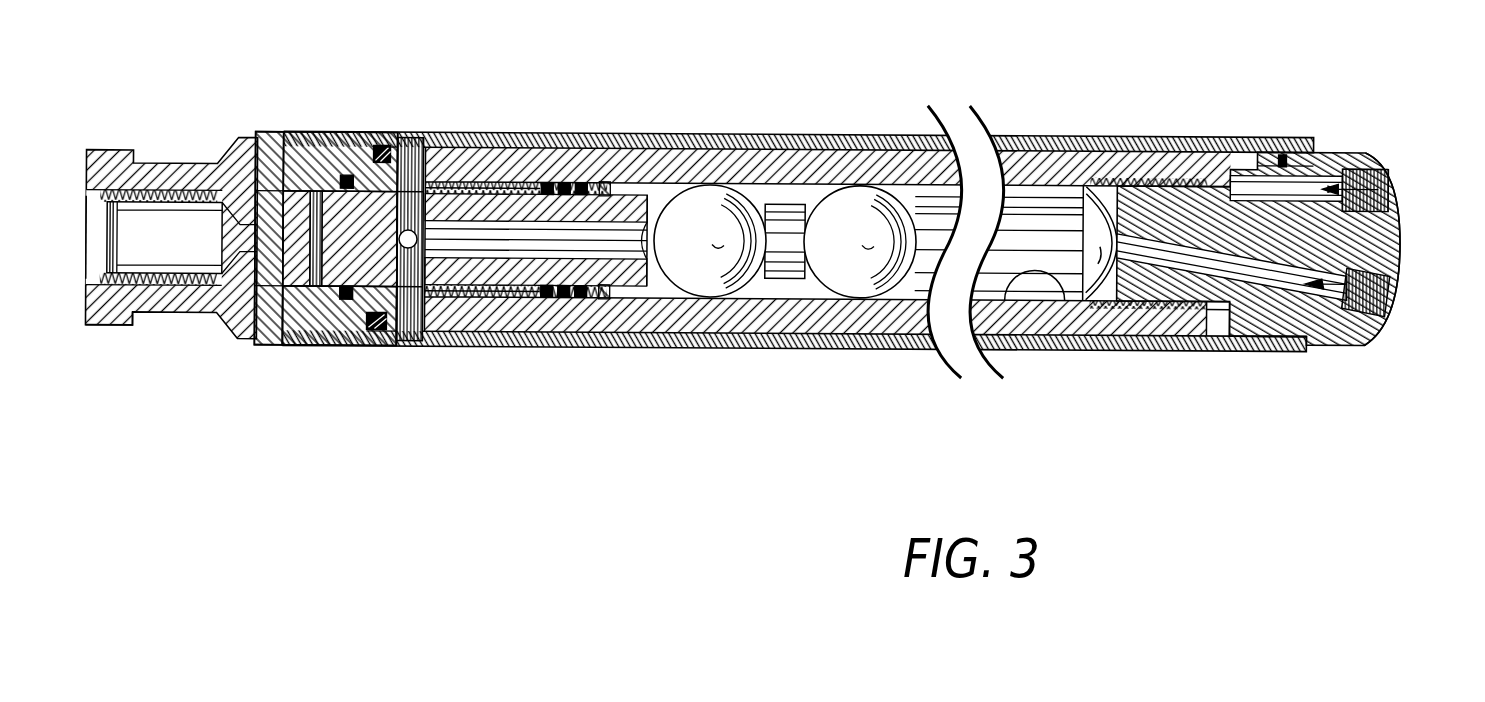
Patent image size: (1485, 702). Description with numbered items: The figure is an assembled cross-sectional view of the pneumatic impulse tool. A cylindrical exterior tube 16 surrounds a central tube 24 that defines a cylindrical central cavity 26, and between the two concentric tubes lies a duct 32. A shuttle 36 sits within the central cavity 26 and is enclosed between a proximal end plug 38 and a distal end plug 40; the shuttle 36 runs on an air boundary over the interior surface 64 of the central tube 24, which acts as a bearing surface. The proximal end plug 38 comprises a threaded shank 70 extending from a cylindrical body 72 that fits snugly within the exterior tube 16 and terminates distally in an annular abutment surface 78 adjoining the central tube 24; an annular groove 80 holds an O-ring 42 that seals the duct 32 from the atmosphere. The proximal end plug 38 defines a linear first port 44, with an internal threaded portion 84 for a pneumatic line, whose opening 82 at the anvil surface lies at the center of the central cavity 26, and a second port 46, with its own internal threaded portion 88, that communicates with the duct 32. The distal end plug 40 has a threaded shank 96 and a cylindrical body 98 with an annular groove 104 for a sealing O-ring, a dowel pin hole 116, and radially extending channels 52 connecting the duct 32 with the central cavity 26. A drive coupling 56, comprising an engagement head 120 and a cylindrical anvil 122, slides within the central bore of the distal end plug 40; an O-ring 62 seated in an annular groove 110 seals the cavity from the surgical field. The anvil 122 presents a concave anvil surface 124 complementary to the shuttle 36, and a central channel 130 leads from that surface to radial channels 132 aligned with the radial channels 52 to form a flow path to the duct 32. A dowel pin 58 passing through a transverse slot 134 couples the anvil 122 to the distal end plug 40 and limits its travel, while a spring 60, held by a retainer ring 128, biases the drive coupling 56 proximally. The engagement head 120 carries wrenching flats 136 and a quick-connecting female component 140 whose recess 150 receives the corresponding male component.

The exterior tube 16 is at (763, 137).
The central tube 24 is at (810, 165).
The central cavity 26 is at (921, 209).
The duct 32 is at (703, 136).
The shuttle 36 is at (789, 246).
The proximal end plug 38 is at (1352, 344).
The distal end plug 40 is at (372, 150).
The O-ring 42 is at (1284, 160).
The first port 44 is at (1373, 332).
The second port 46 is at (1378, 167).
The radial channels 52 is at (410, 322).
The drive coupling 56 is at (95, 325).
The dowel pin 58 is at (283, 147).
The spring 60 is at (560, 184).
The O-ring 62 is at (347, 178).
The interior surface 64 is at (1047, 268).
The shank 70 is at (1112, 272).
The cylindrical body 72 is at (1250, 318).
The annular abutment surface 78 is at (1237, 318).
The annular groove 80 is at (1293, 316).
The opening 82 is at (1100, 182).
The internal threaded portion 84 is at (1385, 300).
The internal threaded portion 88 is at (1385, 193).
The threaded shank 96 is at (491, 288).
The cylindrical body 98 is at (323, 344).
The annular groove 104 is at (359, 333).
The annular groove 110 is at (355, 333).
The dowel pin hole 116 is at (282, 349).
The engagement head 120 is at (140, 320).
The cylindrical anvil 122 is at (541, 285).
The concave anvil surface 124 is at (649, 268).
The retainer ring 128 is at (607, 194).
The central channel 130 is at (490, 238).
The radial channels 132 is at (415, 150).
The transverse slot 134 is at (318, 192).
The wrenching flats 136 is at (100, 153).
The female component 140 is at (92, 232).
The recess 150 is at (135, 231).